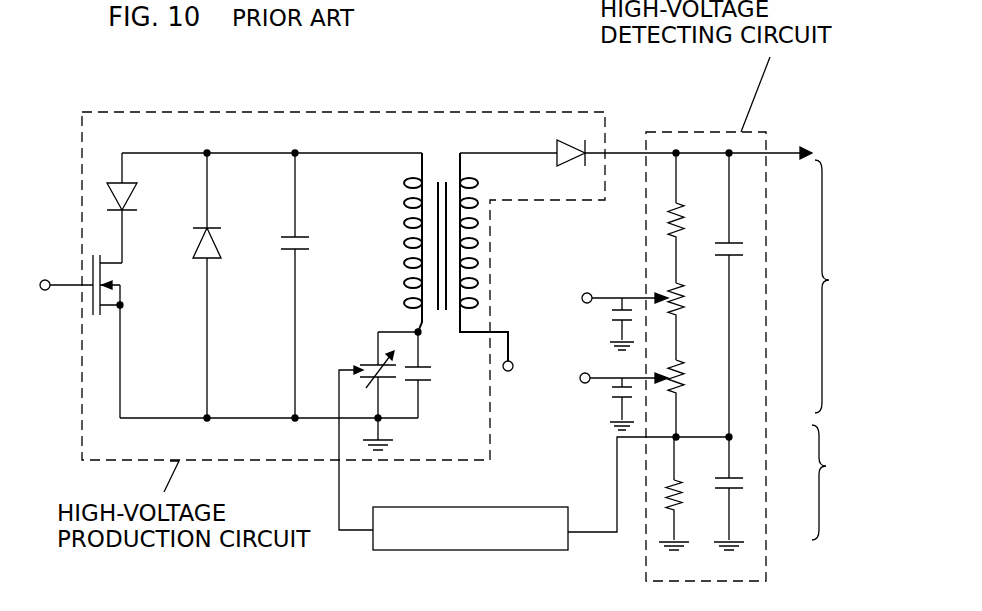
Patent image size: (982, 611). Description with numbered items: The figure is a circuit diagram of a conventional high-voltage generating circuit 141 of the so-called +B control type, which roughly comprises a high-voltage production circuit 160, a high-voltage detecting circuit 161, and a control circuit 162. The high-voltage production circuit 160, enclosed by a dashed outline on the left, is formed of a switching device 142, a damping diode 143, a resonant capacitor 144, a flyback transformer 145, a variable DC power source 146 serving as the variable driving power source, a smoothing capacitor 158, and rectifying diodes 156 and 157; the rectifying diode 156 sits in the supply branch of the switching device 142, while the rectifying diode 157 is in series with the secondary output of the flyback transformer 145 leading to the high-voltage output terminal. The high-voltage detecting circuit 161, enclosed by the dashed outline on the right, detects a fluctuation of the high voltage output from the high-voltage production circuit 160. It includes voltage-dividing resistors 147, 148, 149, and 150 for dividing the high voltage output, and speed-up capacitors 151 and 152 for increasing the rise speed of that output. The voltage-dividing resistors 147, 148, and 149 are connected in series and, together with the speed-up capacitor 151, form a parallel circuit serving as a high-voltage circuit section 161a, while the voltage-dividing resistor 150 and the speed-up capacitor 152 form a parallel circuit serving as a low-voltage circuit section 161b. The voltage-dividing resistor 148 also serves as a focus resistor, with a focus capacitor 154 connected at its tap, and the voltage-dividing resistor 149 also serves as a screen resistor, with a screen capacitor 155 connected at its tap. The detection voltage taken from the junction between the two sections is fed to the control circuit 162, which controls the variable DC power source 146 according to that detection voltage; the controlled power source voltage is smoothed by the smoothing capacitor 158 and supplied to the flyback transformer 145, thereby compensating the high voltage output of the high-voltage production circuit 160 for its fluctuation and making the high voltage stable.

The high-voltage generating circuit 141 is at (90, 92).
The switching device 142 is at (103, 306).
The damping diode 143 is at (198, 262).
The resonant capacitor 144 is at (300, 233).
The flyback transformer 145 is at (484, 243).
The variable DC power source 146 is at (363, 360).
The voltage-dividing resistor 147 is at (662, 208).
The voltage-dividing resistor 148 is at (684, 305).
The voltage-dividing resistor 149 is at (684, 386).
The voltage-dividing resistor 150 is at (668, 505).
The speed-up capacitor 151 is at (737, 238).
The speed-up capacitor 152 is at (735, 478).
The focus capacitor 154 is at (612, 318).
The screen capacitor 155 is at (610, 395).
The rectifying diode 156 is at (133, 200).
The rectifying diode 157 is at (574, 150).
The smoothing capacitor 158 is at (420, 384).
The high-voltage production circuit 160 is at (310, 110).
The high-voltage detecting circuit 161 is at (705, 132).
The high-voltage circuit section 161a is at (850, 286).
The low-voltage circuit section 161b is at (847, 482).
The control circuit 162 is at (466, 551).